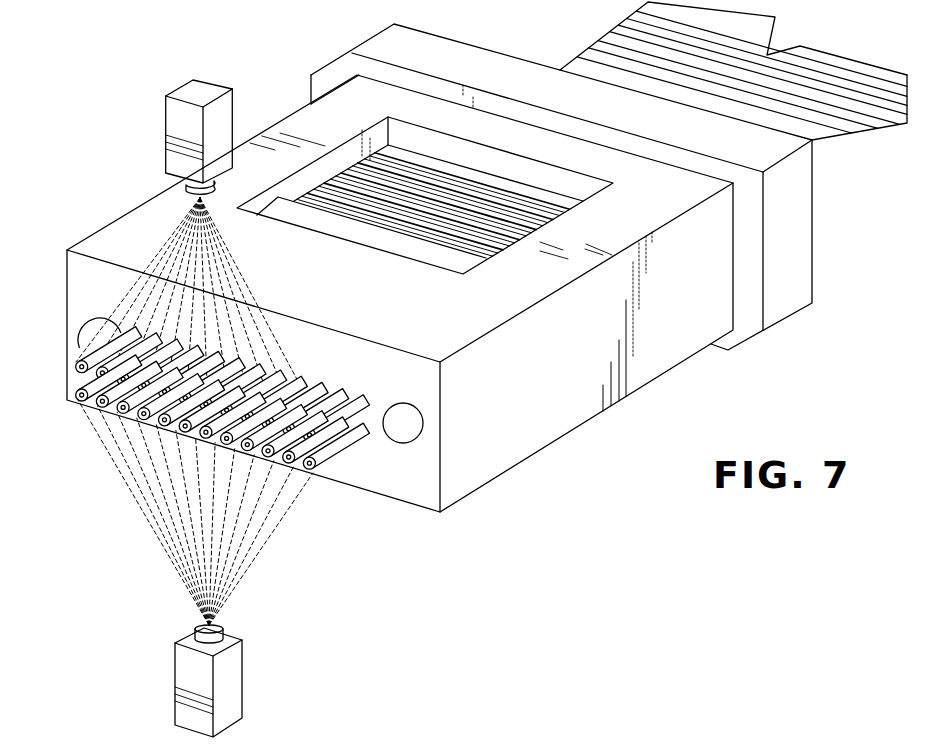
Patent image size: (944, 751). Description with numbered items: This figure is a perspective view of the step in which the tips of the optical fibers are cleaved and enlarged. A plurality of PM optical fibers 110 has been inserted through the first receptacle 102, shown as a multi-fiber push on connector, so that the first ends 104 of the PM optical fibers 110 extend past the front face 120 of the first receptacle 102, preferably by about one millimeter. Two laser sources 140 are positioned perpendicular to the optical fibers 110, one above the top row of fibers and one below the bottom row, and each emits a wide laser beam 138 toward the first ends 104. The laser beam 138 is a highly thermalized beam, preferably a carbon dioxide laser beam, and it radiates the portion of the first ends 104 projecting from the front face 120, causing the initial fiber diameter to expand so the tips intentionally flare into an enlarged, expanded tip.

The first receptacle 102 is at (795, 227).
The first ends 104 is at (78, 400).
The PM optical fibers 110 is at (817, 68).
The front face 120 is at (415, 488).
The laser beam 138 is at (157, 245).
The laser source 140 is at (193, 90).